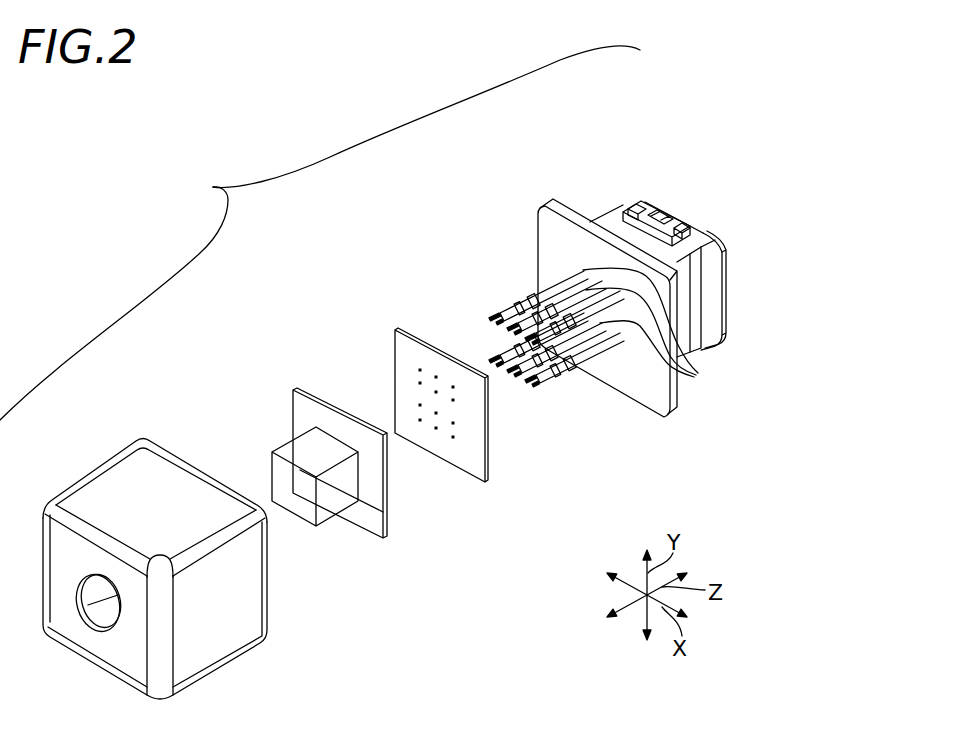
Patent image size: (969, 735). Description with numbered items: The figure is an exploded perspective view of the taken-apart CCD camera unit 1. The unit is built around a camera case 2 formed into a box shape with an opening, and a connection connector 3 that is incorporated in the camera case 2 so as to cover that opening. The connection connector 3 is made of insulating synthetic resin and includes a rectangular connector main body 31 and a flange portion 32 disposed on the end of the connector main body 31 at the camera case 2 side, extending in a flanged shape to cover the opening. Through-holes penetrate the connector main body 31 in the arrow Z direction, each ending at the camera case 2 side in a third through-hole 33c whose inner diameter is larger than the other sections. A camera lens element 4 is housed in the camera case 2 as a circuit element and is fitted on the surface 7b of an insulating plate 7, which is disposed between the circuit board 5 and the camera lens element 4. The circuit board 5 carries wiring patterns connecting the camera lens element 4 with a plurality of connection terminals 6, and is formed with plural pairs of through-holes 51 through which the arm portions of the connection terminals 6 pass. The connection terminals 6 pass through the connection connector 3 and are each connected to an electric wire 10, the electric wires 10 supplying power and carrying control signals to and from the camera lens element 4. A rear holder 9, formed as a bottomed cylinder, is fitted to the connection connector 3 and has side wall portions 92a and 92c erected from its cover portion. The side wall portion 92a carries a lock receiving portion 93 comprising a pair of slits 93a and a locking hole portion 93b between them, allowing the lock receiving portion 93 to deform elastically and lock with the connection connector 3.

The CCD camera unit 1 is at (205, 195).
The camera case 2 is at (112, 454).
The connection connector 3 is at (607, 133).
The camera lens element 4 is at (283, 447).
The circuit board 5 is at (428, 335).
The through-holes 51 is at (420, 383).
The connection terminals 6 is at (498, 360).
The insulating plate 7 is at (320, 400).
The surface 7b is at (368, 512).
The rear holder 9 is at (648, 199).
The electric wire 10 is at (560, 292).
The connector main body 31 is at (615, 223).
The flange portion 32 is at (568, 205).
The third through-hole 33c is at (696, 373).
The side wall portion 92a is at (713, 233).
The side wall portion 92c is at (712, 307).
The lock receiving portion 93 is at (697, 179).
The slits 93a is at (762, 181).
The locking hole portion 93b is at (678, 220).